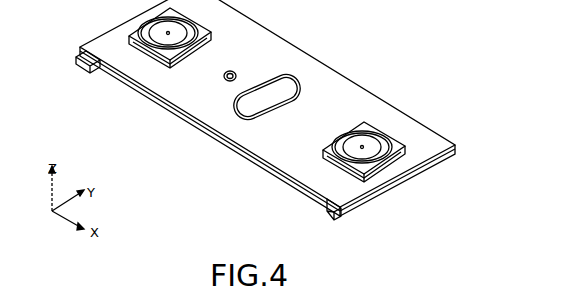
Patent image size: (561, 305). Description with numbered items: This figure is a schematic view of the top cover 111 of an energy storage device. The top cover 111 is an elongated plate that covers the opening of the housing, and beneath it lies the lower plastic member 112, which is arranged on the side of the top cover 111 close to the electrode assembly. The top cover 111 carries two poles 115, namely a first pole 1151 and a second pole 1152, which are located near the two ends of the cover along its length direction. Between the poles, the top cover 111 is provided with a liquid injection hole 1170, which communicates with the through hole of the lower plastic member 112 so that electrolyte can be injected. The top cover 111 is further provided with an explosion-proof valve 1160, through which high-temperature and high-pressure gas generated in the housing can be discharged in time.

The top cover 111 is at (332, 186).
The lower plastic member 112 is at (410, 184).
The poles 115 is at (260, 109).
The first pole 1151 is at (163, 42).
The second pole 1152 is at (323, 150).
The explosion-proof valve 1160 is at (286, 93).
The liquid injection hole 1170 is at (236, 72).